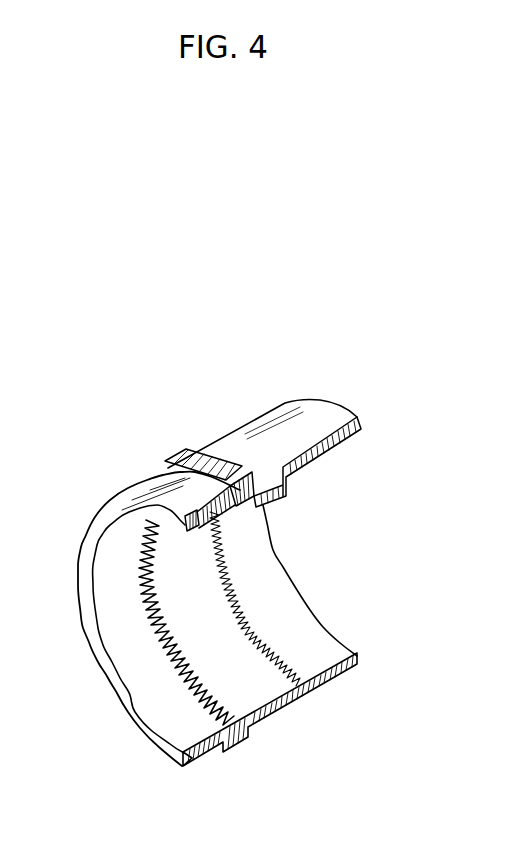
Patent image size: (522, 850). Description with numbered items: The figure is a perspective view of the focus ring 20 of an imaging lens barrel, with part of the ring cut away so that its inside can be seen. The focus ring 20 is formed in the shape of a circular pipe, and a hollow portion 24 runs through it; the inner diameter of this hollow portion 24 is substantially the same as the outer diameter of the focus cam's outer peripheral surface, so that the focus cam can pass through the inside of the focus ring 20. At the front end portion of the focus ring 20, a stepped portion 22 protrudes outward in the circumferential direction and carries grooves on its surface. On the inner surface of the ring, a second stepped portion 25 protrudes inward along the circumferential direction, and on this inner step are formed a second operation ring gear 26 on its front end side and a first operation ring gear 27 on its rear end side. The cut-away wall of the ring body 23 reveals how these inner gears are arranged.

The focus ring 20 is at (153, 708).
The stepped portion 22 is at (178, 456).
The curved band body 23 is at (157, 737).
The hollow portion 24 is at (122, 636).
The stepped portion 25 is at (207, 630).
The second operation ring gear 26 is at (160, 633).
The first operation ring gear 27 is at (267, 643).